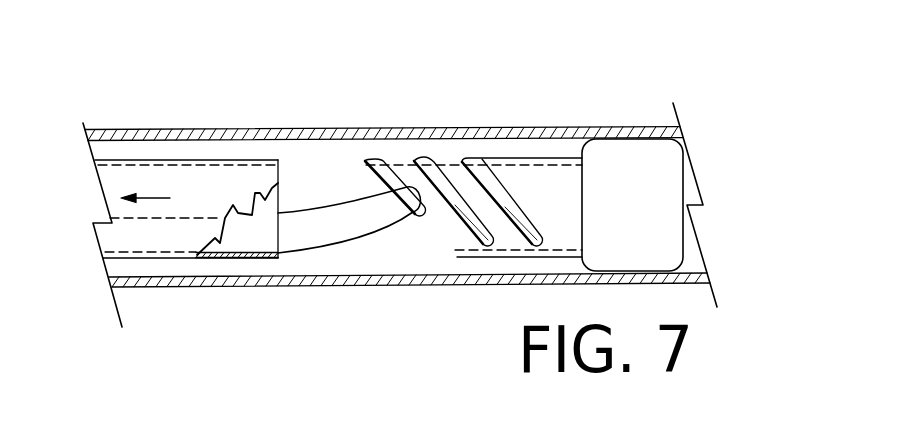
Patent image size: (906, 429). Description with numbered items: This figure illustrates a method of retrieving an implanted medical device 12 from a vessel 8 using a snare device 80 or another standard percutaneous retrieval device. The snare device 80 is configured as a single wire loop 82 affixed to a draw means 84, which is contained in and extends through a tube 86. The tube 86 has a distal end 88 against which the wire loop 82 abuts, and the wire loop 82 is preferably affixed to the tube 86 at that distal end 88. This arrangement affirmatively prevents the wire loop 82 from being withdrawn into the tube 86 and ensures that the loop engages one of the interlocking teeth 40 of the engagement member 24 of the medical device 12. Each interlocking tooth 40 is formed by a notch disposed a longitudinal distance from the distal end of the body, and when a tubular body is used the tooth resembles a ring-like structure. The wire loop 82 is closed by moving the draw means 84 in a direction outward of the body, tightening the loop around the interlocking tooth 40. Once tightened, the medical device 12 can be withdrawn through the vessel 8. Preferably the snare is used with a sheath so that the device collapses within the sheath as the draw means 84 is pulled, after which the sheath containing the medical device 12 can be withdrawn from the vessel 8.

The vessel 8 is at (419, 128).
The medical device 12 is at (632, 138).
The engagement member 24 is at (453, 243).
The interlocking tooth 40 is at (449, 156).
The snare device 80 is at (127, 165).
The wire loop 82 is at (337, 205).
The draw means 84 is at (181, 217).
The tube 86 is at (195, 242).
The distal end 88 is at (280, 170).